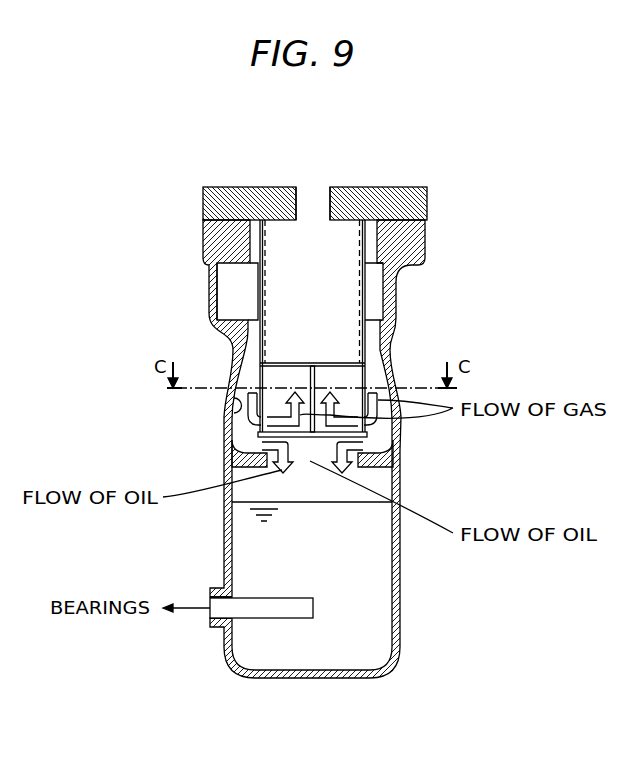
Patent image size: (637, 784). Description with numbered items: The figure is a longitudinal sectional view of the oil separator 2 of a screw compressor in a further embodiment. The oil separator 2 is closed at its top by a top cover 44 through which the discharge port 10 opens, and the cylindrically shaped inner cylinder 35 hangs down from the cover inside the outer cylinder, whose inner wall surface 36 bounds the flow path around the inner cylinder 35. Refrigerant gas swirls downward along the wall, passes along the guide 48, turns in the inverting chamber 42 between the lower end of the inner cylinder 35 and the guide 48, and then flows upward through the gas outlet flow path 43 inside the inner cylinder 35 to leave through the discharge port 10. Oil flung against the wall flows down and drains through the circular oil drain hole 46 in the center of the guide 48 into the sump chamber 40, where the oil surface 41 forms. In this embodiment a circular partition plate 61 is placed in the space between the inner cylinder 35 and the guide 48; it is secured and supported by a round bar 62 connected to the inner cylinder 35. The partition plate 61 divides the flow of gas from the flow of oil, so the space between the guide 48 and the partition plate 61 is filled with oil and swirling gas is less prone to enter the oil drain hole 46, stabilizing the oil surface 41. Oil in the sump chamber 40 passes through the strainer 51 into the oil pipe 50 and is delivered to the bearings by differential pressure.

The oil separator 2 is at (425, 230).
The discharge port 10 is at (312, 195).
The inner cylinder 35 is at (250, 295).
The oil separator inner wall surface 36 is at (236, 406).
The sump chamber 40 is at (377, 635).
The oil surface 41 is at (257, 502).
The inverting chamber 42 is at (332, 375).
The gas outlet flow path 43 is at (342, 240).
The top cover 44 is at (217, 187).
The oil drain hole 46 is at (342, 473).
The guide 48 is at (383, 451).
The oil pipe 50 is at (210, 622).
The strainer 51 is at (267, 620).
The partition plate 61 is at (258, 434).
The round bar 62 is at (260, 375).